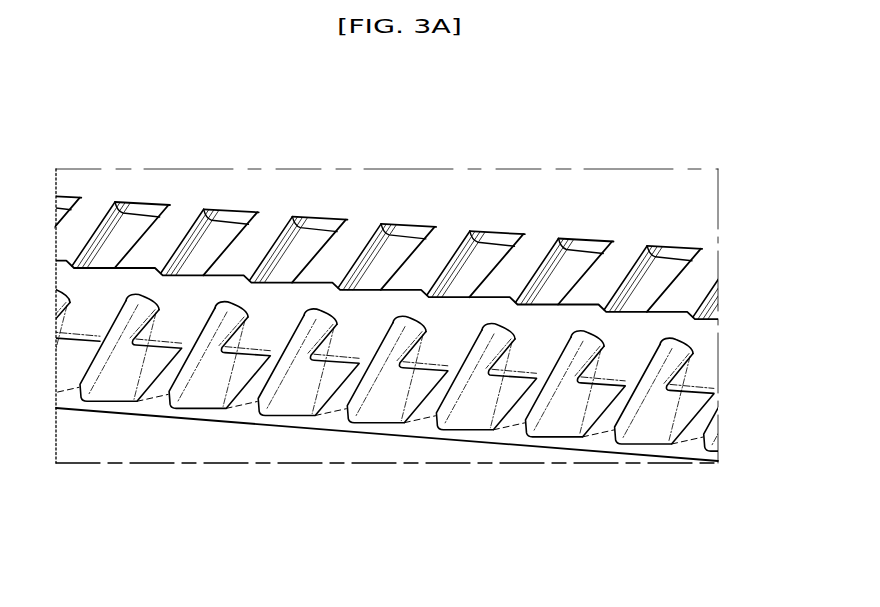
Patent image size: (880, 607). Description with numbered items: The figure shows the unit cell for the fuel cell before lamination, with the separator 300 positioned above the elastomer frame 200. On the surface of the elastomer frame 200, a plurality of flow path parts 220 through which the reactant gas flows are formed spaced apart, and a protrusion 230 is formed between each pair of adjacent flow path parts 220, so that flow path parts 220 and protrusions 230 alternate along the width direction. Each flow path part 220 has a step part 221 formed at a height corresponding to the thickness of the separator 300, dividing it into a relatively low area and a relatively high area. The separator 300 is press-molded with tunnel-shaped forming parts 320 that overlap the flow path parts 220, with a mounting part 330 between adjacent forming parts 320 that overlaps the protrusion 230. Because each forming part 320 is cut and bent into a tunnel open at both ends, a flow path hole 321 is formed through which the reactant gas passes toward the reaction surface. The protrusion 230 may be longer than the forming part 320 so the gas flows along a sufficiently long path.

The separator 300 is at (702, 192).
The forming part 320 is at (662, 273).
The flow path hole 321 is at (408, 230).
The mounting part 330 is at (680, 295).
The elastomer frame 200 is at (705, 370).
The flow path part 220 is at (565, 424).
The step part 221 is at (702, 390).
The protrusion 230 is at (517, 416).